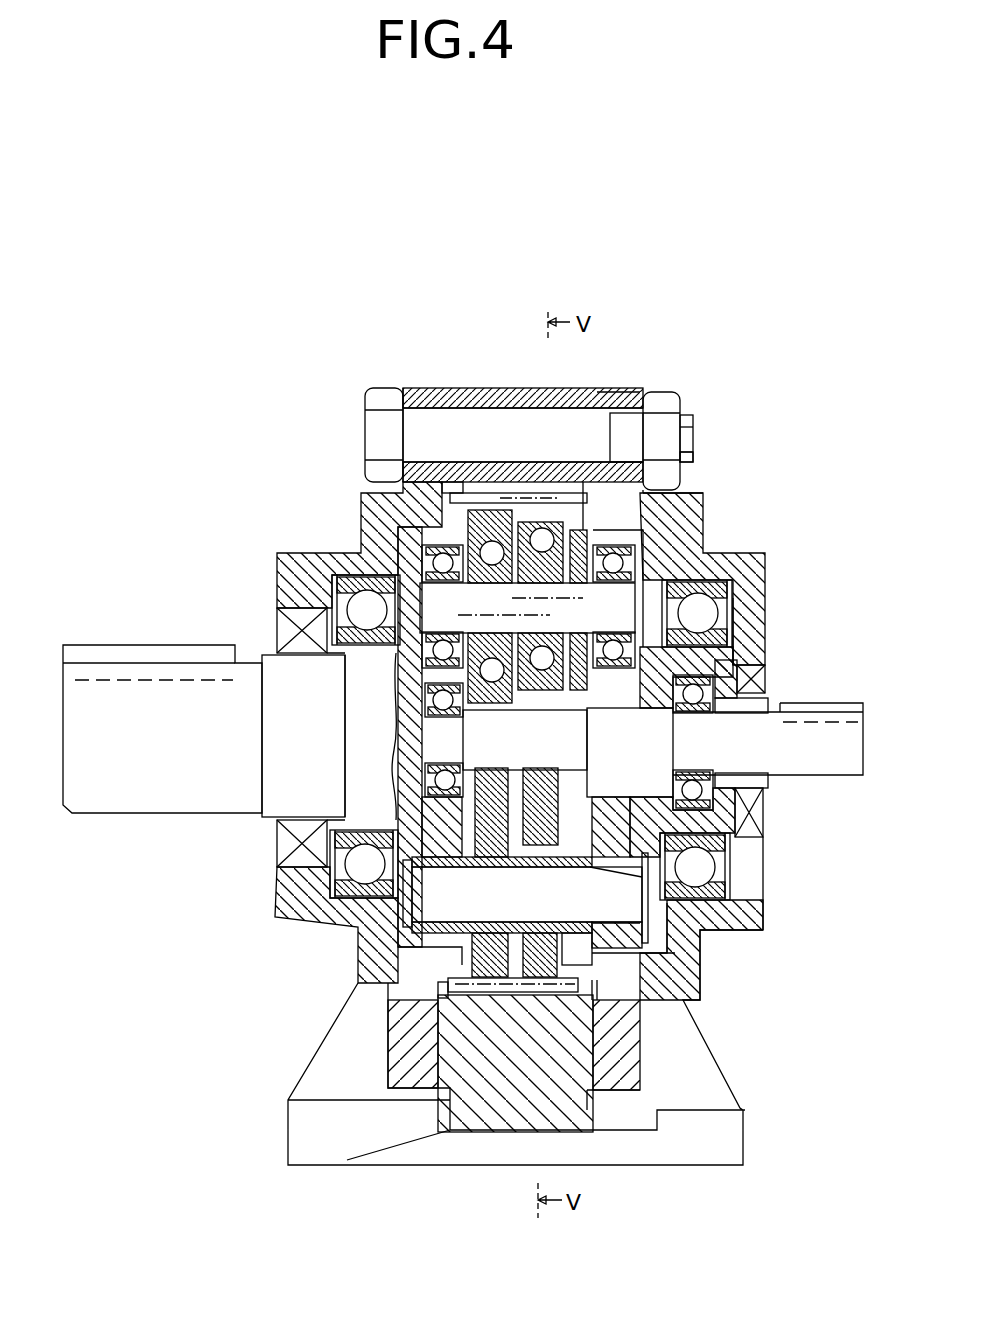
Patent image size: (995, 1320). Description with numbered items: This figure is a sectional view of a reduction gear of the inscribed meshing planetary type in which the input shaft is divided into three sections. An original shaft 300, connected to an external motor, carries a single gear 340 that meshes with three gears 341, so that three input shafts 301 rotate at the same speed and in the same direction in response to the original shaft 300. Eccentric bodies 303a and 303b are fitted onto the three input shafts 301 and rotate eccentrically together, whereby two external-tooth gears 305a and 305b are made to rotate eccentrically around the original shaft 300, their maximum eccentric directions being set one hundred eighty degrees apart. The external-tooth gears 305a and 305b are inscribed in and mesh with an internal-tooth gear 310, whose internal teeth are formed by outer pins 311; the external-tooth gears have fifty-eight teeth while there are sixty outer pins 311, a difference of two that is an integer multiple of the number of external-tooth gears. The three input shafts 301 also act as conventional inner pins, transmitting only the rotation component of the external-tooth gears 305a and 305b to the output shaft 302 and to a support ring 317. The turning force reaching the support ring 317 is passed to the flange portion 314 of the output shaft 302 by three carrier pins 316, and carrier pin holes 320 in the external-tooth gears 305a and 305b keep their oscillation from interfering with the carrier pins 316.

The original shaft 300 is at (752, 733).
The input shaft 301 is at (615, 605).
The output shaft 302 is at (250, 675).
The eccentric body 303a is at (455, 497).
The eccentric body 303b is at (445, 515).
The external-tooth gear 305a is at (548, 510).
The external-tooth gear 305b is at (503, 520).
The internal-tooth gear 310 is at (683, 419).
The outer pin 311 is at (622, 503).
The flange portion 314 is at (365, 678).
The carrier pin 316 is at (640, 920).
The support ring 317 is at (653, 667).
The carrier pin hole 320 is at (660, 897).
The gear 340 is at (700, 818).
The gear 341 is at (640, 530).